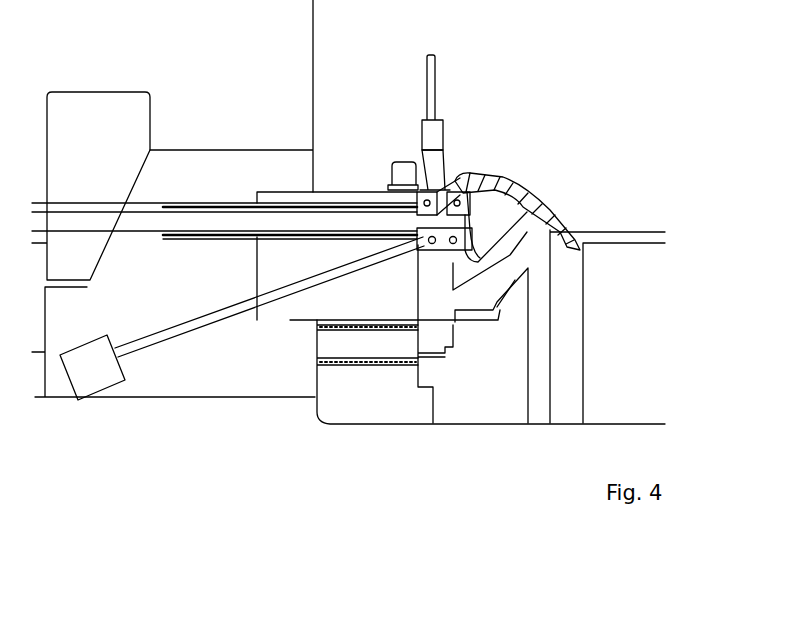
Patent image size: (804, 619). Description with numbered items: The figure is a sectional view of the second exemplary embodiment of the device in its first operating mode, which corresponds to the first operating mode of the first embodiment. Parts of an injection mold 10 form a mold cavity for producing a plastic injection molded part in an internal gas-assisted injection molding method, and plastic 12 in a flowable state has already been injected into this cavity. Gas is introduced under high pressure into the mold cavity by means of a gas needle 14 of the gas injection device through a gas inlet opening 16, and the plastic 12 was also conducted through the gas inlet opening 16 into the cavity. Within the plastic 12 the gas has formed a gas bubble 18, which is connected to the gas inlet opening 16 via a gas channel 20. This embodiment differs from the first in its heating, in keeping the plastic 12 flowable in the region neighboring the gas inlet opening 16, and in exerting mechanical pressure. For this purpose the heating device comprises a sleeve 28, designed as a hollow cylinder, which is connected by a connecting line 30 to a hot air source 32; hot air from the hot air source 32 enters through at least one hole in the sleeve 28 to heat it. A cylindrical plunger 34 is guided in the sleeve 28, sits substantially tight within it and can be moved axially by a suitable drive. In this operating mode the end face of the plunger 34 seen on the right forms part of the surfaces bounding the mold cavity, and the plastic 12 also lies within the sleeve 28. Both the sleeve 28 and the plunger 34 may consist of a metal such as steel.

The injection mold 10 is at (584, 68).
The plastic 12 is at (527, 203).
The gas needle 14 is at (445, 163).
The gas inlet opening 16 is at (422, 177).
The gas bubble 18 is at (488, 205).
The gas channel 20 is at (468, 177).
The sleeve 28 is at (432, 246).
The connecting line 30 is at (230, 313).
The hot air source 32 is at (97, 380).
The plunger 34 is at (273, 222).